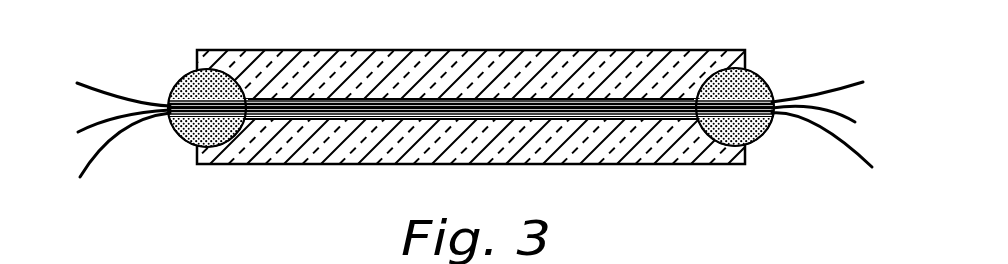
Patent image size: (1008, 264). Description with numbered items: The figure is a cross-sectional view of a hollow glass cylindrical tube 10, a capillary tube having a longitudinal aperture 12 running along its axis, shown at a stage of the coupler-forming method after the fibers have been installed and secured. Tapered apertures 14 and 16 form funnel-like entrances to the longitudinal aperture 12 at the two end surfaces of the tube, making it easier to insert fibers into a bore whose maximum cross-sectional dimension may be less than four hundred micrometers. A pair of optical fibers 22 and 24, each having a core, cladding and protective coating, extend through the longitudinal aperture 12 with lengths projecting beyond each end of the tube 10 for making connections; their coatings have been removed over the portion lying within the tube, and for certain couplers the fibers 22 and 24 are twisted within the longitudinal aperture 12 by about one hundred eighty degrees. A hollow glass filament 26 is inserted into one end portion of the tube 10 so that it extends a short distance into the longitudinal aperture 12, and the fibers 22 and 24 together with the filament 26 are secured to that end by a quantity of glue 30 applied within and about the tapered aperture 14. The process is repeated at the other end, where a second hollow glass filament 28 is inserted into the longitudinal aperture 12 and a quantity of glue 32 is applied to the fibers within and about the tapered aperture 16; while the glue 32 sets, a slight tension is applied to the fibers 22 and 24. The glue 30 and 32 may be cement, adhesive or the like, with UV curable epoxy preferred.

The hollow glass cylindrical tube 10 is at (576, 48).
The longitudinal aperture 12 is at (611, 118).
The tapered aperture 14 is at (180, 143).
The tapered aperture 16 is at (755, 68).
The optical fiber 22 is at (98, 89).
The optical fiber 24 is at (89, 130).
The hollow glass filament 26 is at (110, 155).
The second hollow glass filament 28 is at (837, 143).
The glue 30 is at (178, 83).
The glue 32 is at (757, 139).